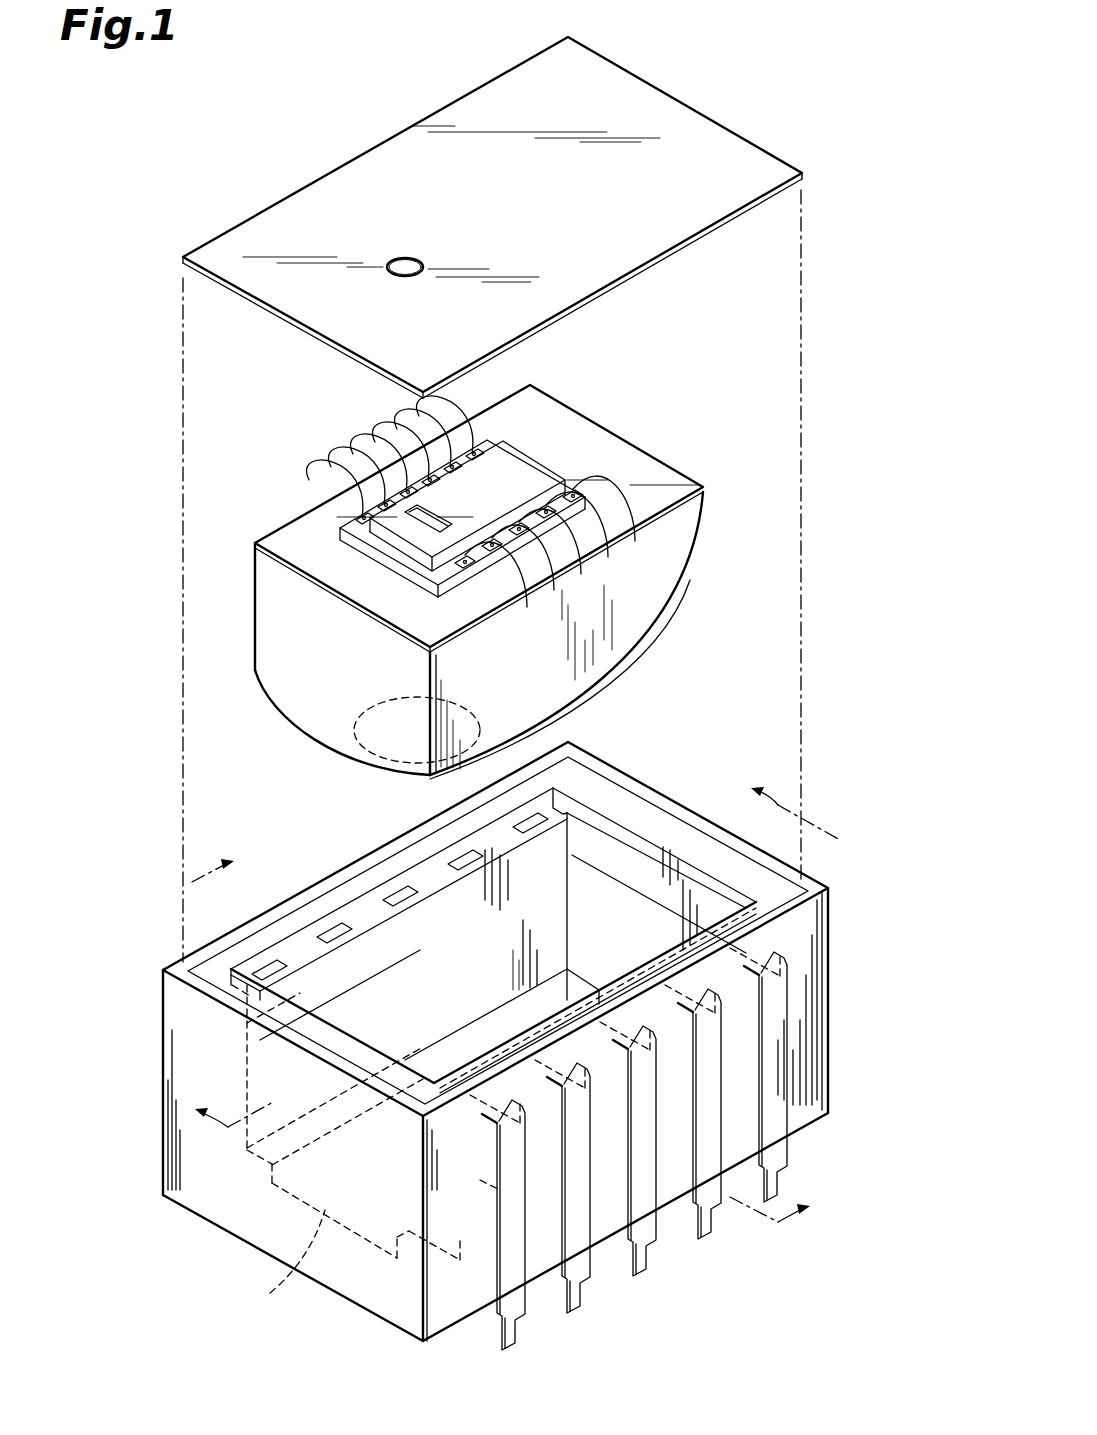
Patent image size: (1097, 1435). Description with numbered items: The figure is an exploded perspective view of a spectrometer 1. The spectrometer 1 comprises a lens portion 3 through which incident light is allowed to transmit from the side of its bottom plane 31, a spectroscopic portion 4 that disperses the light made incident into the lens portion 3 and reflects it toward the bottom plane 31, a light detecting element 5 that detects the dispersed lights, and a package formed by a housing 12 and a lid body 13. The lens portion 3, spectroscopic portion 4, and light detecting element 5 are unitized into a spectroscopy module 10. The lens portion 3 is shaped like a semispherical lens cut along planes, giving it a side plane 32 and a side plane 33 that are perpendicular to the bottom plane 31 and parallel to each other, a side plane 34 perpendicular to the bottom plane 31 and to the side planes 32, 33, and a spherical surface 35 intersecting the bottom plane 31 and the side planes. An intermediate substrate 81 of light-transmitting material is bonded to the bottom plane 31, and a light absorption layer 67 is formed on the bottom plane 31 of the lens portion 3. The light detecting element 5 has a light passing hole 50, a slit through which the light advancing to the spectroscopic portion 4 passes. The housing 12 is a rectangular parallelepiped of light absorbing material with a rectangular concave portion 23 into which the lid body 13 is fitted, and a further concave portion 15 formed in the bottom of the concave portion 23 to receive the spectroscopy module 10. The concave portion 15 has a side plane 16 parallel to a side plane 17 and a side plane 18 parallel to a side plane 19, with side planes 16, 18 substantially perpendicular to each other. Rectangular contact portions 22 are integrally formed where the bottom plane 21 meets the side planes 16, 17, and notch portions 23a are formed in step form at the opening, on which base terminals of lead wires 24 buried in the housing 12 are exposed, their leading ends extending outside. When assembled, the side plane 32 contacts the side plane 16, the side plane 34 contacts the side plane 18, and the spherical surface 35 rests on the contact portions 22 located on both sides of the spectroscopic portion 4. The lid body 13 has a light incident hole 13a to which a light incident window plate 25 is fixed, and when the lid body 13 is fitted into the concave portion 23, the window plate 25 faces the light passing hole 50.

The spectrometer 1 is at (720, 86).
The lens portion 3 is at (475, 570).
The spectroscopic portion 4 is at (356, 748).
The light detecting element 5 is at (513, 460).
The spectroscopy module 10 is at (476, 570).
The housing 12 is at (537, 1043).
The lid body 13 is at (747, 155).
The light incident hole 13a is at (400, 276).
The concave portion 15 is at (697, 885).
The side plane 16 is at (377, 955).
The side plane 17 is at (505, 1050).
The side plane 18 is at (330, 1083).
The side plane 19 is at (620, 923).
The bottom plane 21 is at (357, 1212).
The contact portion 22 is at (432, 1055).
The concave portion 23 is at (647, 818).
The notch portion 23a is at (555, 806).
The lead wire 24 is at (465, 858).
The light incident window plate 25 is at (405, 262).
The bottom plane 31 is at (580, 432).
The side plane 32 is at (295, 552).
The side plane 33 is at (638, 595).
The side plane 34 is at (305, 682).
The spherical surface 35 is at (608, 638).
The light passing hole 50 is at (415, 517).
The light absorption layer 67 is at (545, 407).
The intermediate substrate 81 is at (352, 540).